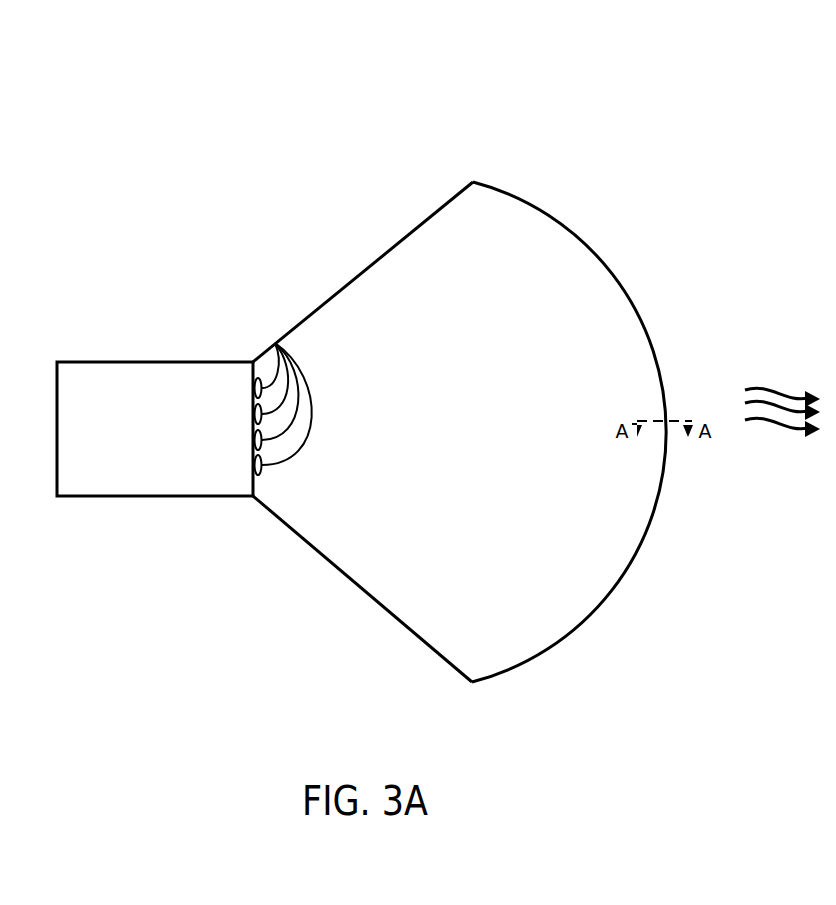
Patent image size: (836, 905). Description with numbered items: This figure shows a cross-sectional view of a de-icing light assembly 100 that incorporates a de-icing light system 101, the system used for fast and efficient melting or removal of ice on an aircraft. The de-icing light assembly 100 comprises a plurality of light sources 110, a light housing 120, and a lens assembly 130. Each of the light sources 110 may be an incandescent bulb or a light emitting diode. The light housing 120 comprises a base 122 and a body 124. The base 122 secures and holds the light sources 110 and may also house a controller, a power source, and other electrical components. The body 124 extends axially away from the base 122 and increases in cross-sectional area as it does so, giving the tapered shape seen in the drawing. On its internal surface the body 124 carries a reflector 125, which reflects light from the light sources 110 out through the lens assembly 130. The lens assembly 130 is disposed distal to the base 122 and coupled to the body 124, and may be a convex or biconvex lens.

The de-icing light assembly 100 is at (305, 100).
The de-icing light system 101 is at (280, 133).
The plurality of light sources 110 is at (272, 319).
The light housing 120 is at (258, 253).
The base 122 is at (155, 429).
The body 124 is at (378, 258).
The reflector 125 is at (400, 617).
The lens assembly 130 is at (640, 304).